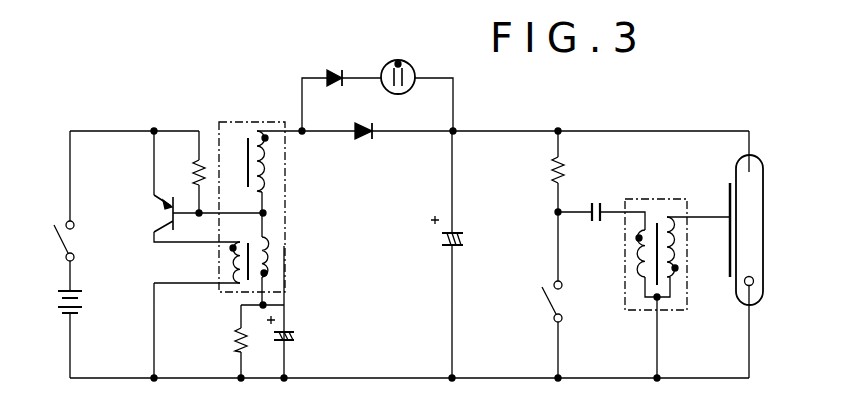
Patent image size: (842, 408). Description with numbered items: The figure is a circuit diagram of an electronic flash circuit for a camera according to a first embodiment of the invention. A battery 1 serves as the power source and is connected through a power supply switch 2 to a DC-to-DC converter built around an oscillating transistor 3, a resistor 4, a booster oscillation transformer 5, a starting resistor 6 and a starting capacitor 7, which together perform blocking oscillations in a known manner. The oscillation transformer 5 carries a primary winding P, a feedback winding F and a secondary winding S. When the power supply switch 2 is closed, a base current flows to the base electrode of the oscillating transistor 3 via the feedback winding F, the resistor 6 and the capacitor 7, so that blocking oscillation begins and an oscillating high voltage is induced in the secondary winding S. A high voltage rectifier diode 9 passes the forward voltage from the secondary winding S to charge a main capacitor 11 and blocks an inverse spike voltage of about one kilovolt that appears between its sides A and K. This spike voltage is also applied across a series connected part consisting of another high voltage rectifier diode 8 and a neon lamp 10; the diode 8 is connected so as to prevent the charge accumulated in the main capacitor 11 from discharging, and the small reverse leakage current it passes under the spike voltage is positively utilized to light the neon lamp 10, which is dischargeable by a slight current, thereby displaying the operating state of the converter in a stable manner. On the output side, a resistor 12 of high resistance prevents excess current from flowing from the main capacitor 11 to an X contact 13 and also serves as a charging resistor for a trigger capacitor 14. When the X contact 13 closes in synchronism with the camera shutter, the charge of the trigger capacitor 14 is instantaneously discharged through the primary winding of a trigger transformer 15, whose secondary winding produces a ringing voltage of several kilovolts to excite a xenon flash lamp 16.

The battery 1 is at (56, 306).
The power supply switch 2 is at (58, 250).
The oscillating transistor 3 is at (160, 213).
The resistor 4 is at (193, 178).
The oscillation transformer 5 is at (236, 121).
The resistor 6 is at (234, 343).
The capacitor 7 is at (299, 336).
The high voltage rectifier diode 8 is at (343, 75).
The high voltage rectifier diode 9 is at (368, 141).
The neon lamp 10 is at (413, 70).
The main capacitor 11 is at (443, 250).
The resistor 12 is at (552, 163).
The X contact 13 is at (546, 311).
The trigger capacitor 14 is at (587, 204).
The trigger transformer 15 is at (658, 198).
The xenon flash lamp 16 is at (735, 174).
The secondary winding S is at (270, 167).
The feedback winding F is at (272, 257).
The primary winding P is at (224, 263).
The side A of the diode A is at (335, 117).
The side K of the diode K is at (392, 117).